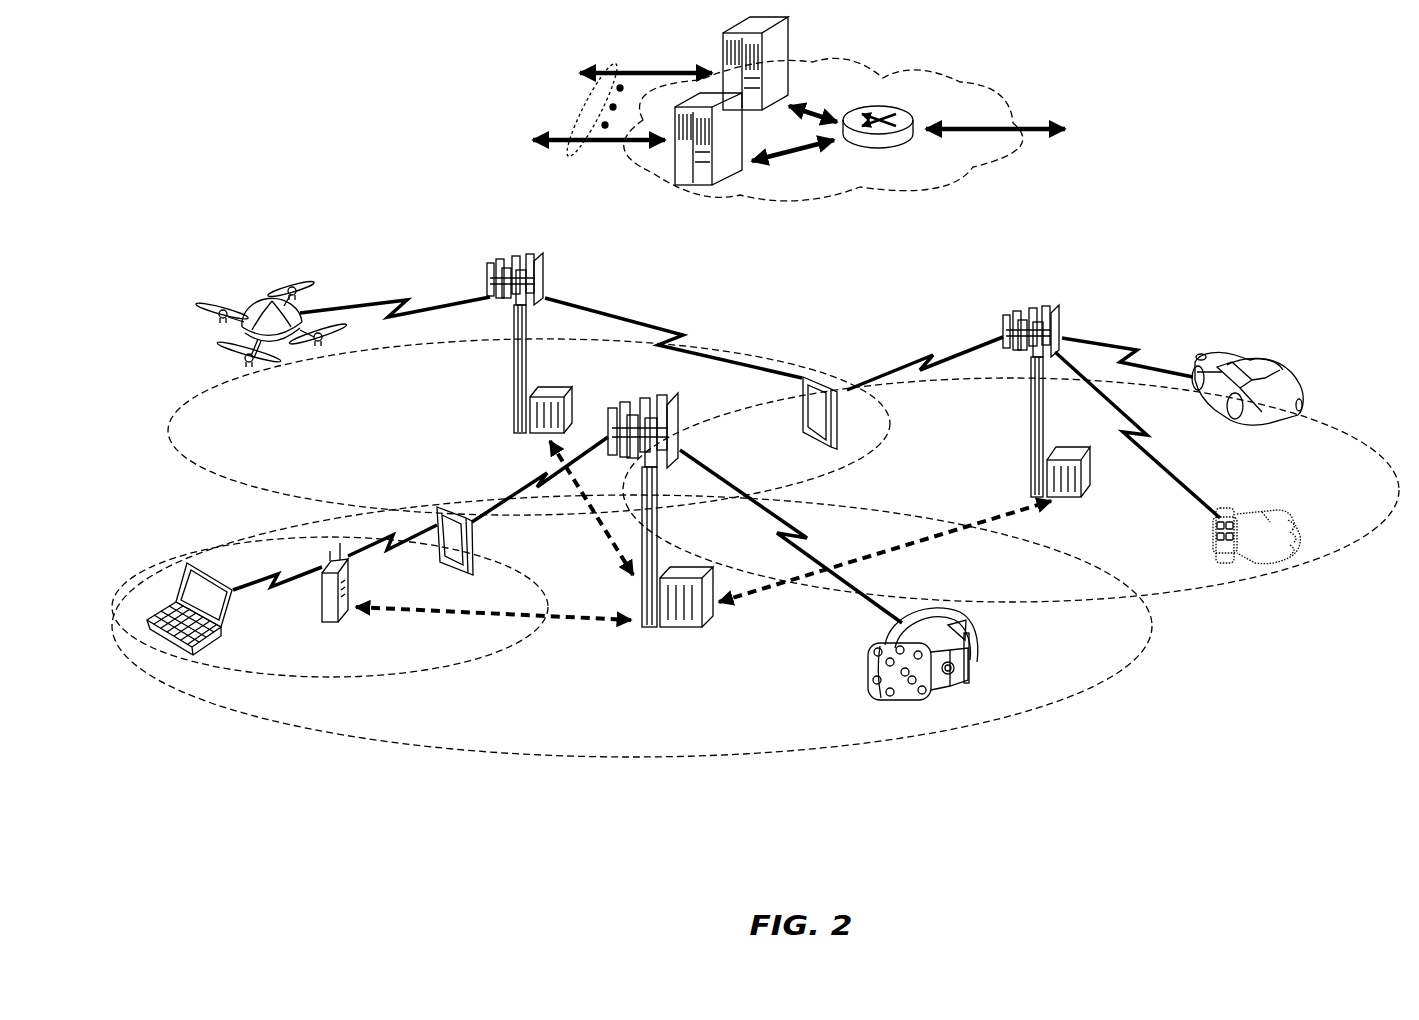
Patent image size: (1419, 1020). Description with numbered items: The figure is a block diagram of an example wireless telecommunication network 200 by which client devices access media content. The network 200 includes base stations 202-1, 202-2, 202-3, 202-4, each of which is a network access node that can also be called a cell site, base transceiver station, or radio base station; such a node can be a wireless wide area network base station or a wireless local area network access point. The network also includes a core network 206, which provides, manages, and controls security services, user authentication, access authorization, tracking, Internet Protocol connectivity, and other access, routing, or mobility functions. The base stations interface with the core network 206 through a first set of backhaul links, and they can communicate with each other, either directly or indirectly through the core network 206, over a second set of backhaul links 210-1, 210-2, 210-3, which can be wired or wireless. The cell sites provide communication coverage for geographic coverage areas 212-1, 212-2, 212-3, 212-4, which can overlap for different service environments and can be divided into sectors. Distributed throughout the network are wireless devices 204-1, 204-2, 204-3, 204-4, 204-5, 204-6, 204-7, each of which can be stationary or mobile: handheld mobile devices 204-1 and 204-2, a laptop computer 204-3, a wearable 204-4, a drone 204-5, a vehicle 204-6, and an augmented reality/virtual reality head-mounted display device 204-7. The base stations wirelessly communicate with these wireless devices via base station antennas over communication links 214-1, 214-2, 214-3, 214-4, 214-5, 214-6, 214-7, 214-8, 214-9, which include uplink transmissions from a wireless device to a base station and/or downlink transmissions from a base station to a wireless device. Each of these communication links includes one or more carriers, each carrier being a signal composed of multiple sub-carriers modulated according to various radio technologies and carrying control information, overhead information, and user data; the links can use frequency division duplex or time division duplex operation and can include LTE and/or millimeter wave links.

The wireless telecommunication network 200 is at (1324, 114).
The core network 206 is at (907, 192).
The base station 202-1 is at (647, 630).
The base station 202-2 is at (510, 378).
The base station 202-3 is at (1023, 413).
The base station 202-4 is at (320, 616).
The wireless device 204-1 is at (472, 558).
The wireless device 204-2 is at (800, 413).
The wireless device 204-3 is at (170, 640).
The wireless device 204-4 is at (1230, 515).
The wireless device 204-5 is at (280, 348).
The wireless device 204-6 is at (1265, 368).
The wireless device 204-7 is at (982, 640).
The backhaul link 210-1 is at (388, 608).
The backhaul link 210-2 is at (953, 544).
The backhaul link 210-3 is at (607, 535).
The geographic coverage area 212-1 is at (560, 755).
The geographic coverage area 212-2 is at (453, 669).
The geographic coverage area 212-3 is at (231, 484).
The geographic coverage area 212-4 is at (1330, 416).
The communication link 214-1 is at (810, 540).
The communication link 214-2 is at (540, 483).
The communication link 214-3 is at (243, 590).
The communication link 214-4 is at (390, 553).
The communication link 214-5 is at (400, 302).
The communication link 214-6 is at (677, 340).
The communication link 214-7 is at (923, 358).
The communication link 214-8 is at (1157, 448).
The communication link 214-9 is at (1123, 350).